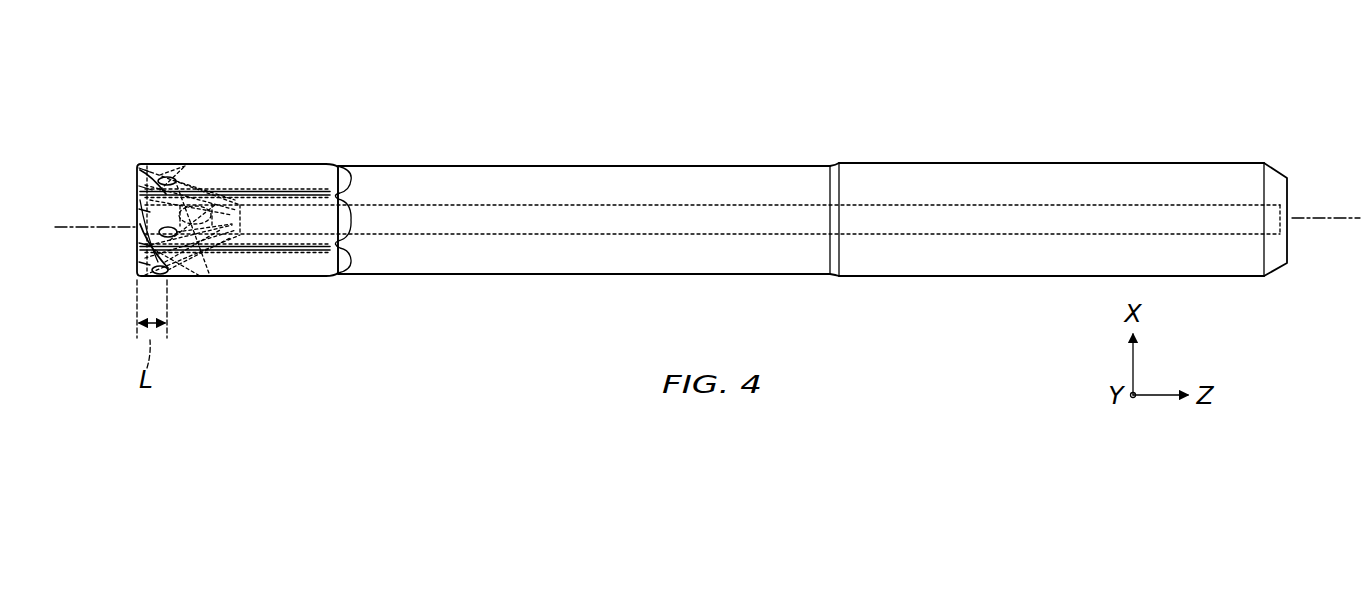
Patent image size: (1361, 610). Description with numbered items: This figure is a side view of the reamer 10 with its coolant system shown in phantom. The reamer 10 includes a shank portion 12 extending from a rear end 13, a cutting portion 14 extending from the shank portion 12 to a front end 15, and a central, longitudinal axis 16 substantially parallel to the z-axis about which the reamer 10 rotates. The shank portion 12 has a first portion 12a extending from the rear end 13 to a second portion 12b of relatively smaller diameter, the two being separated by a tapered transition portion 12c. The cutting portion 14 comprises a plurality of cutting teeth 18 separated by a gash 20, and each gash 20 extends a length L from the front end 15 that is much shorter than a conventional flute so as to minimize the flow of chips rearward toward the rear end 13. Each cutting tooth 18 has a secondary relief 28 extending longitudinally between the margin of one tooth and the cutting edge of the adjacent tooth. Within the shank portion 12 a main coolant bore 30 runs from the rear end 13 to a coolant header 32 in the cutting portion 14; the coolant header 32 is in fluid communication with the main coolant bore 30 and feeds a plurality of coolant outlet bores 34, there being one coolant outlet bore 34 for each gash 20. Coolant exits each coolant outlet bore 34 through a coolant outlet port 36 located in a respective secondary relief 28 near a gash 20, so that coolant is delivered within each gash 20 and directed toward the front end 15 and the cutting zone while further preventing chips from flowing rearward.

The reamer 10 is at (703, 183).
The shank portion 12 is at (739, 156).
The first portion 12a is at (1075, 190).
The second portion 12b is at (603, 192).
The tapered transition portion 12c is at (833, 163).
The rear end 13 is at (1292, 196).
The cutting portion 14 is at (199, 195).
The front end 15 is at (95, 182).
The central longitudinal axis 16 is at (1328, 220).
The cutting teeth 18 is at (137, 168).
The gash 20 is at (135, 186).
The secondary relief 28 is at (299, 182).
The main coolant bore 30 is at (434, 206).
The coolant header 32 is at (238, 238).
The coolant outlet bores 34 is at (193, 183).
The coolant outlet port 36 is at (167, 178).